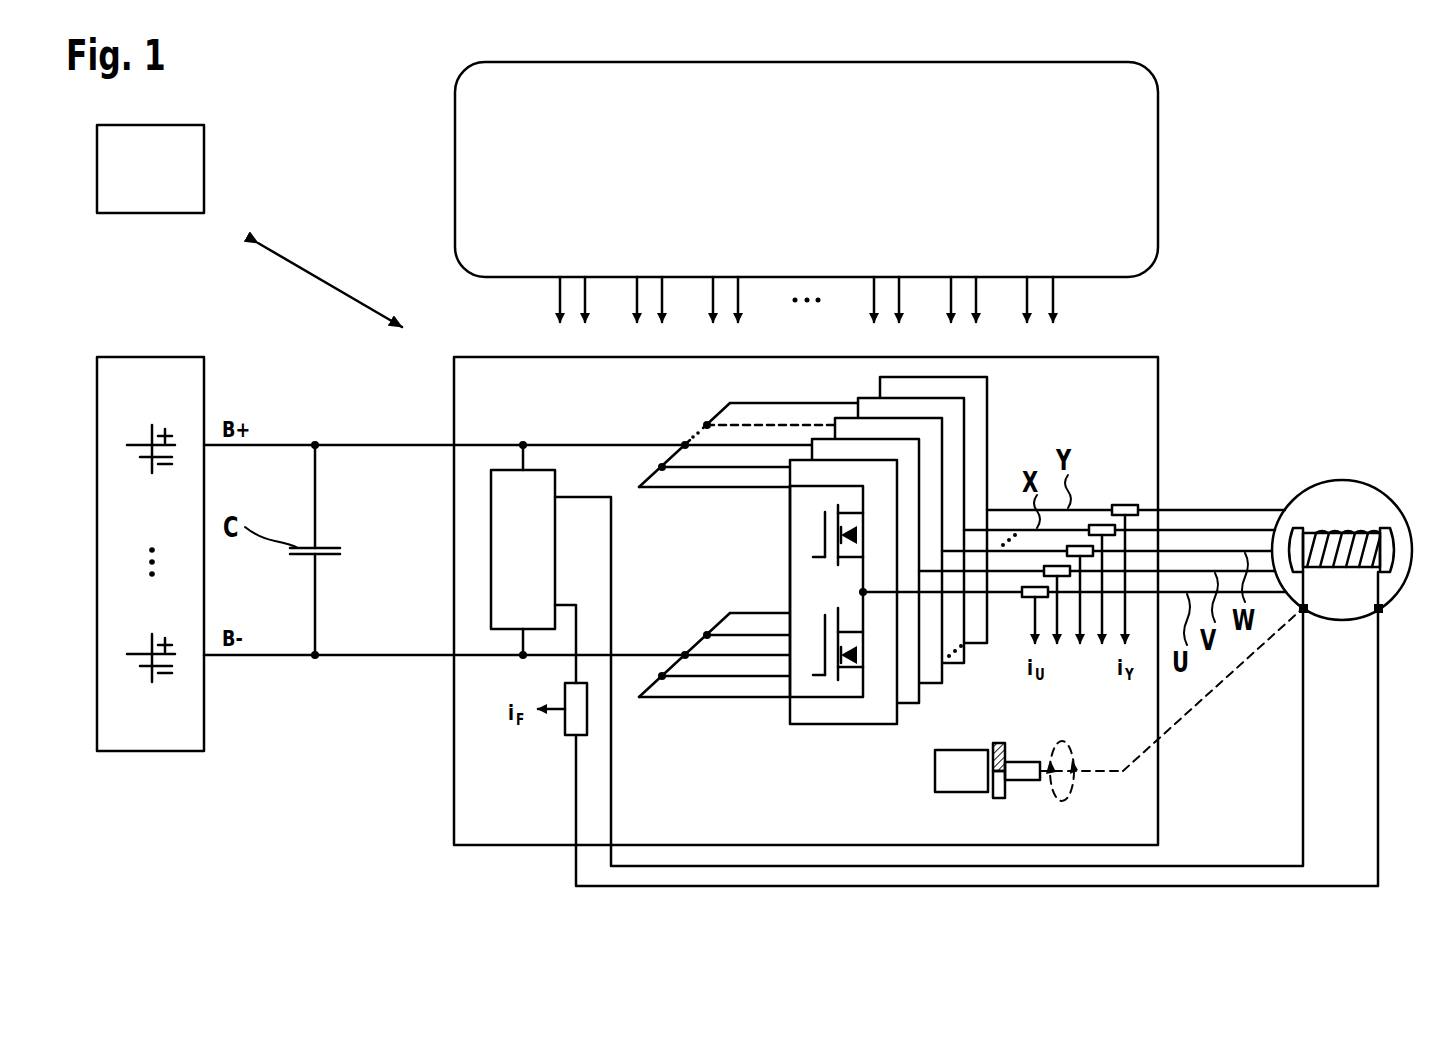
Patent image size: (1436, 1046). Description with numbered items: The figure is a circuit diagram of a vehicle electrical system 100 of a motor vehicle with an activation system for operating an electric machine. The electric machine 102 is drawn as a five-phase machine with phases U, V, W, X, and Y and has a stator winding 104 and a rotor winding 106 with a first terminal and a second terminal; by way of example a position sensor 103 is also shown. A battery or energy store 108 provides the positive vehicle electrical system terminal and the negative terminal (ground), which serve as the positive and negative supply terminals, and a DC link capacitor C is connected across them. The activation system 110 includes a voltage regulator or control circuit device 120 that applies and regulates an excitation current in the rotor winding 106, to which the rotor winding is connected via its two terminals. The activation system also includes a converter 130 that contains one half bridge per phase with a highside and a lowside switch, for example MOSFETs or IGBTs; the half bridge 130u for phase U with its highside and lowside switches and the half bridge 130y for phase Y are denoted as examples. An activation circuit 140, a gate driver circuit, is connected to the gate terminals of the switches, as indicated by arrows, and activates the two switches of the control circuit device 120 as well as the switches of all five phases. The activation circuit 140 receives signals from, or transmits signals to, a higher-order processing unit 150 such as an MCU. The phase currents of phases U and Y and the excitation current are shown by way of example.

The vehicle electrical system 100 is at (1336, 209).
The electric machine 102 is at (1353, 540).
The position sensor 103 is at (935, 772).
The stator winding 104 is at (1340, 480).
The rotor winding 106 is at (1341, 575).
The energy store 108 is at (204, 385).
The activation system 110 is at (454, 387).
The control circuit device 120 is at (491, 523).
The converter 130 is at (940, 525).
The half bridge for phase Y 130y is at (987, 393).
The half bridge for phase U 130u is at (897, 480).
The activation circuit 140 is at (455, 170).
The higher-order processing unit 150 is at (204, 170).